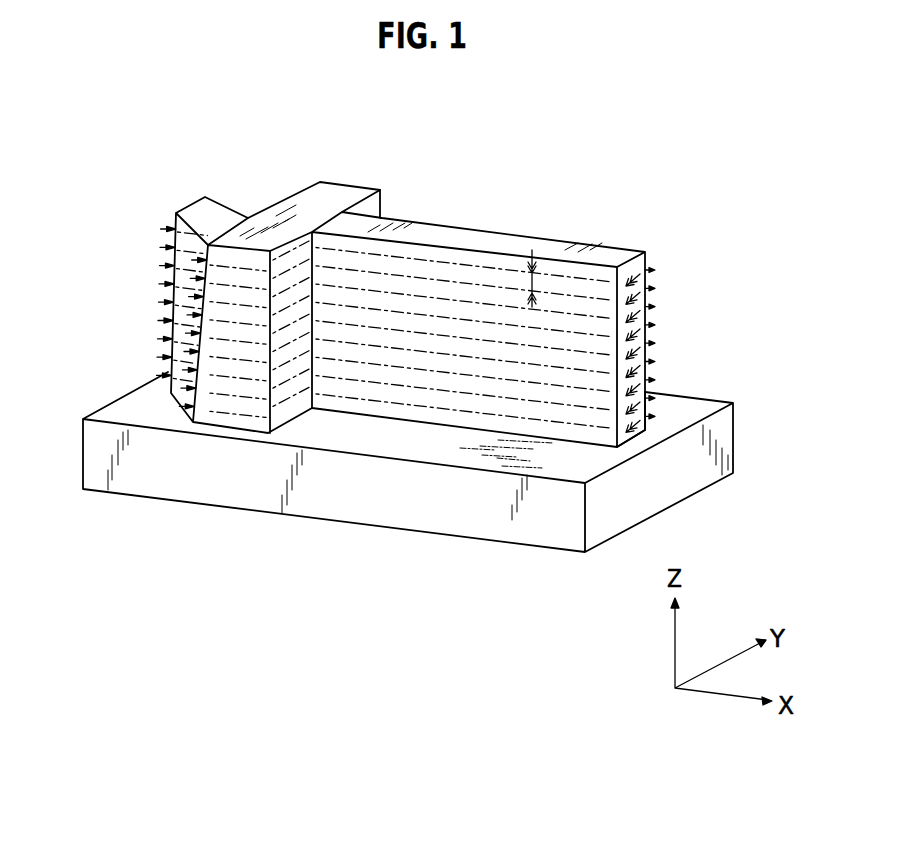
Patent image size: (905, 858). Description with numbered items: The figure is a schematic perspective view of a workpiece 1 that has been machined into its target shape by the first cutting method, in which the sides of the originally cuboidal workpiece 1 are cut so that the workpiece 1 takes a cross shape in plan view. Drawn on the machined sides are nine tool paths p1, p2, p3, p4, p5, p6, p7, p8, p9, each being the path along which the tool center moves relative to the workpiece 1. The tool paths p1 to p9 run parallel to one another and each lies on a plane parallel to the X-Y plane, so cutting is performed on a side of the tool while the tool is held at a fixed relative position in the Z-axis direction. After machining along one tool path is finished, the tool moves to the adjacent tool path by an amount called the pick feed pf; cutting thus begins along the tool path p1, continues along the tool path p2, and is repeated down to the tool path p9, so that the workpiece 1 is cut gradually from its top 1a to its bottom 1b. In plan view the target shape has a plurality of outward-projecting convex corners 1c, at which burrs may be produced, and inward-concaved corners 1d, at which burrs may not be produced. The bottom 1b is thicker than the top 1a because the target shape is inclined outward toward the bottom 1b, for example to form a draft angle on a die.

The workpiece 1 is at (122, 408).
The top 1a is at (609, 253).
The bottom 1b is at (646, 430).
The corner 1c is at (205, 197).
The corner 1d is at (278, 203).
The tool path p1 is at (350, 250).
The tool path p2 is at (424, 278).
The tool path p3 is at (457, 300).
The tool path p4 is at (485, 322).
The tool path p5 is at (332, 323).
The tool path p6 is at (365, 347).
The tool path p7 is at (393, 368).
The tool path p8 is at (425, 387).
The tool path p9 is at (453, 410).
The pick feed pf is at (532, 285).